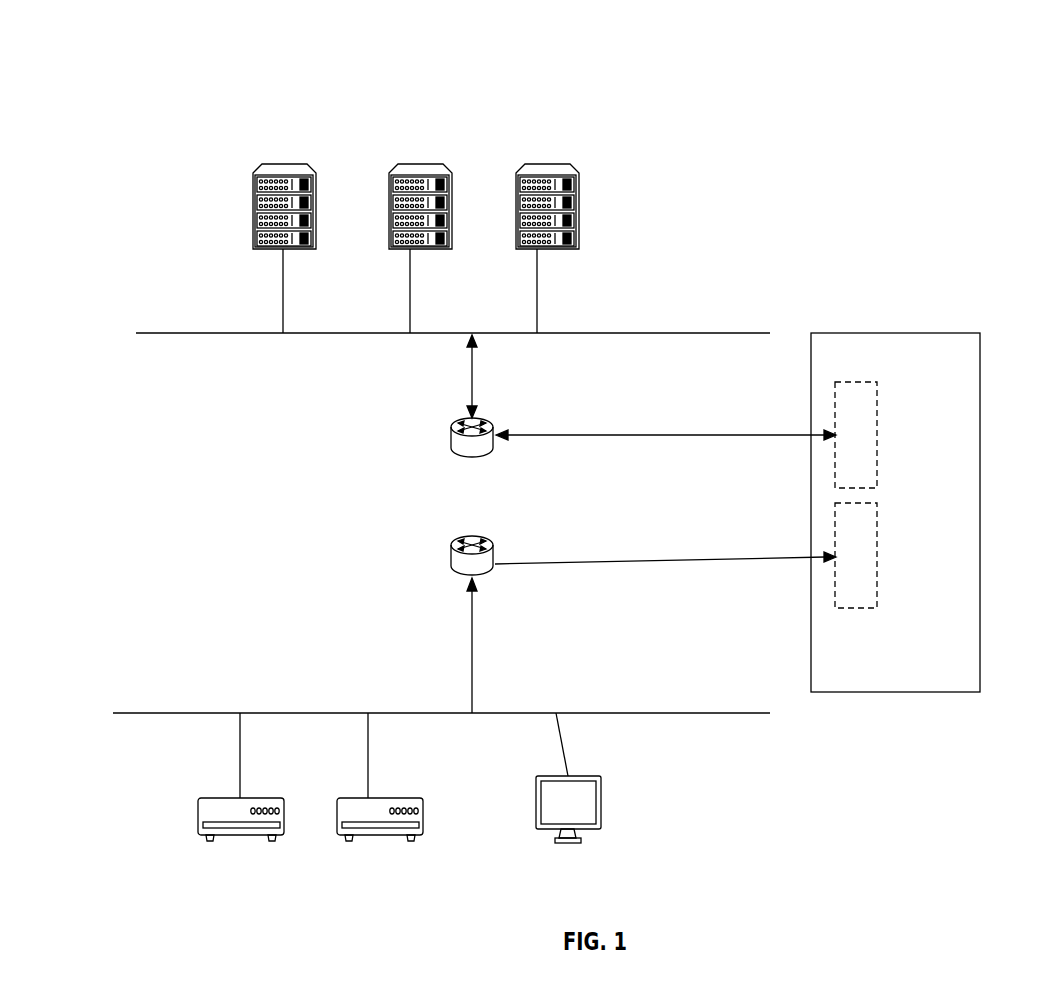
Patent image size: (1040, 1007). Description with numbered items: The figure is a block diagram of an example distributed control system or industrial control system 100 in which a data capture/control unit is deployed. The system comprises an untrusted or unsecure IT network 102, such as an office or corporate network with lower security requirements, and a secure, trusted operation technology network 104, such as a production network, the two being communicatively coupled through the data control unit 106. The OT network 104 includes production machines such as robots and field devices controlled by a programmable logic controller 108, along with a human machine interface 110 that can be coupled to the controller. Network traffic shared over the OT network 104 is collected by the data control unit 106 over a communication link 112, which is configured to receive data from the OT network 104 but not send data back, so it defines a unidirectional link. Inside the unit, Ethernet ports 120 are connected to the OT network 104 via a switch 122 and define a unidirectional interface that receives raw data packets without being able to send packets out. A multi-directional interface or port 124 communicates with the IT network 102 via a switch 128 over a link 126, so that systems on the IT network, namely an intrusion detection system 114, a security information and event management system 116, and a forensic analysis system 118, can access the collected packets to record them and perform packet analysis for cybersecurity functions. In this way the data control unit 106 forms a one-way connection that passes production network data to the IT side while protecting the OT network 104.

The industrial control system 100 is at (786, 82).
The IT network 102 is at (177, 333).
The OT network 104 is at (150, 713).
The data control unit 106 is at (828, 355).
The programmable logic controller 108 is at (207, 806).
The human machine interface 110 is at (540, 782).
The communication link 112 is at (622, 563).
The intrusion detection system 114 is at (265, 172).
The security information and event management system 116 is at (422, 183).
The forensic analysis system 118 is at (563, 183).
The Ethernet ports 120 is at (845, 522).
The switch 122 is at (452, 545).
The multi-directional interface 124 is at (850, 400).
The IT network data link 126 is at (648, 437).
The switch 128 is at (452, 427).